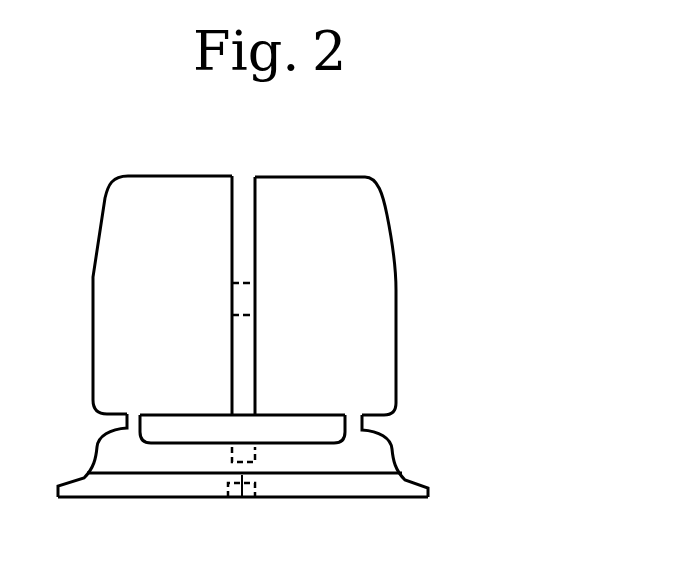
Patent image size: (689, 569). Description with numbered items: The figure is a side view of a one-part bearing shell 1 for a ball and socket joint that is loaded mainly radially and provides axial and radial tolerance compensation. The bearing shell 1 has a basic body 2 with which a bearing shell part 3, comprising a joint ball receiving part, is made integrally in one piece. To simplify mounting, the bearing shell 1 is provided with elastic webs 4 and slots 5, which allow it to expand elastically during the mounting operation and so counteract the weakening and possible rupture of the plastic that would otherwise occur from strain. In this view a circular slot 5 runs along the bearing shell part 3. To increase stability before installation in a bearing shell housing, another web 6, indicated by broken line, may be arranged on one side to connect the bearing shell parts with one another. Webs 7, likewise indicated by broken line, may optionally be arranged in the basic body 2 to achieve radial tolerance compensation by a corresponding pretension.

The bearing shell 1 is at (257, 336).
The basic body 2 is at (335, 483).
The bearing shell part 3 is at (385, 352).
The elastic webs 4 is at (130, 422).
The slots 5 is at (242, 195).
The web 6 is at (247, 300).
The webs 7 is at (242, 500).